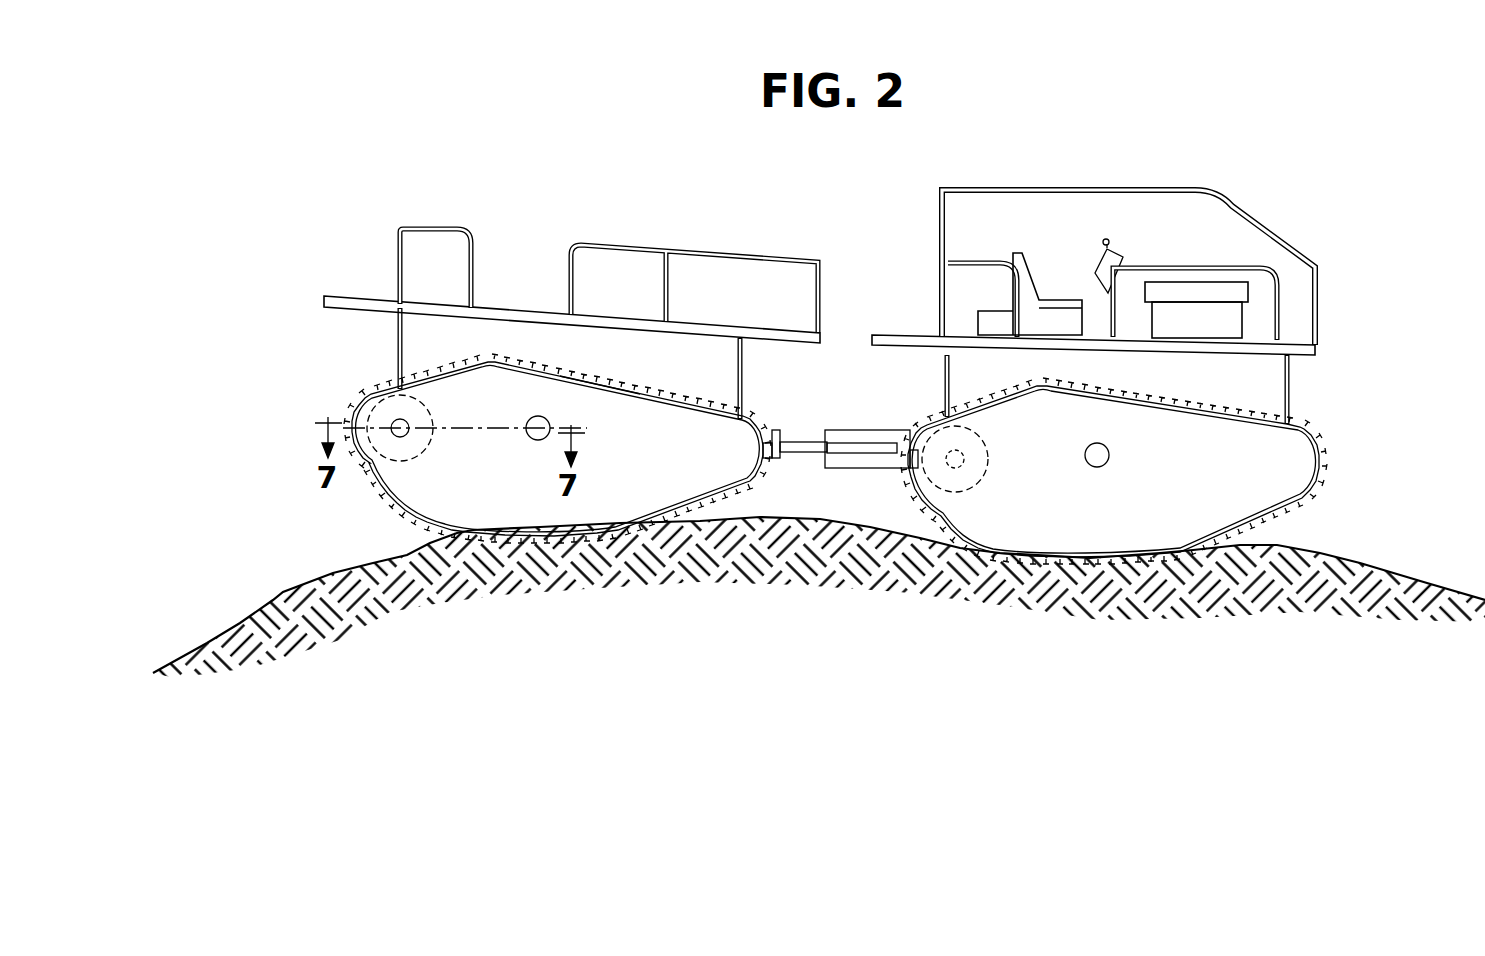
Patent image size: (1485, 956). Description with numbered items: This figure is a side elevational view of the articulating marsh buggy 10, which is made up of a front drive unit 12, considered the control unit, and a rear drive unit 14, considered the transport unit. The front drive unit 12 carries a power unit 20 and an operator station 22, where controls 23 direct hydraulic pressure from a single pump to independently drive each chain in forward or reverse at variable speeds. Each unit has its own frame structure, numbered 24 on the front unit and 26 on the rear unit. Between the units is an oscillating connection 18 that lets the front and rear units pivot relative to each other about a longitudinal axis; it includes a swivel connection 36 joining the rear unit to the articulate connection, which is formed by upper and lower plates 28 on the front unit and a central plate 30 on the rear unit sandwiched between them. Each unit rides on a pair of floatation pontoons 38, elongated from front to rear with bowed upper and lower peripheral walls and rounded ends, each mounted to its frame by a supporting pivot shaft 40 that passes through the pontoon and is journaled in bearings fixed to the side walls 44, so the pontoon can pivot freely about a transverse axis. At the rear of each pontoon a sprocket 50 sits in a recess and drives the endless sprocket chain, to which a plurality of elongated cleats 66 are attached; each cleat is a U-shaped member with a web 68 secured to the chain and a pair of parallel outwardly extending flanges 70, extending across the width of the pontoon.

The articulating marsh buggy 10 is at (958, 166).
The front drive unit 12 is at (1320, 336).
The rear drive unit 14 is at (339, 308).
The oscillating connection 18 is at (779, 429).
The power unit 20 is at (1192, 290).
The operator station 22 is at (1046, 281).
The controls 23 is at (1109, 242).
The frame structure 24 is at (899, 333).
The frame structure 26 is at (501, 303).
The upper and lower plates 28 is at (858, 462).
The central plate 30 is at (883, 447).
The swivel connection 36 is at (769, 456).
The floatation pontoon 38 is at (662, 441).
The supporting pivot shaft 40 is at (532, 440).
The side walls 44 is at (416, 481).
The sprocket 50 is at (432, 405).
The cleats 66 is at (657, 382).
The web 68 is at (596, 377).
The flanges 70 is at (601, 375).